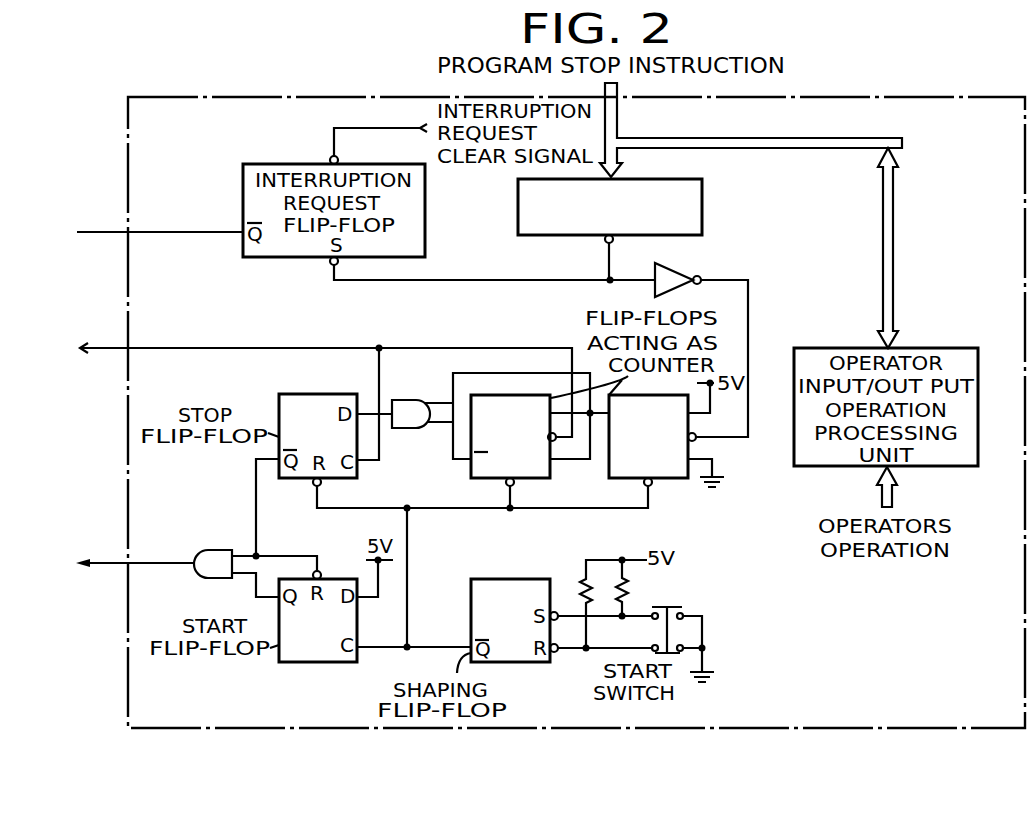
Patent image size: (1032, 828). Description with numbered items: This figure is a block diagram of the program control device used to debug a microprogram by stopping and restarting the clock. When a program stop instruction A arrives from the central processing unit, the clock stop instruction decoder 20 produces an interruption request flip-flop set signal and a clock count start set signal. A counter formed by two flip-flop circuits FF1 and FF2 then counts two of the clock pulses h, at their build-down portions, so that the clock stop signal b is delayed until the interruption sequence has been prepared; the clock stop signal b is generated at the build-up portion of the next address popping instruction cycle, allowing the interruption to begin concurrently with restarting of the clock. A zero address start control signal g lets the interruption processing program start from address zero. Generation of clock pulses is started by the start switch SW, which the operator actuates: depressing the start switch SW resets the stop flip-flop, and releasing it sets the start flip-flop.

The clock stop instruction decoder 20 is at (703, 208).
The program stop instruction A is at (751, 127).
The zero address start control signal g is at (160, 221).
The clock pulses h is at (326, 379).
The clock stop signal b is at (135, 553).
The first flip-flop circuit FF1 is at (510, 436).
The second flip-flop circuit FF2 is at (609, 460).
The start switch SW is at (666, 635).